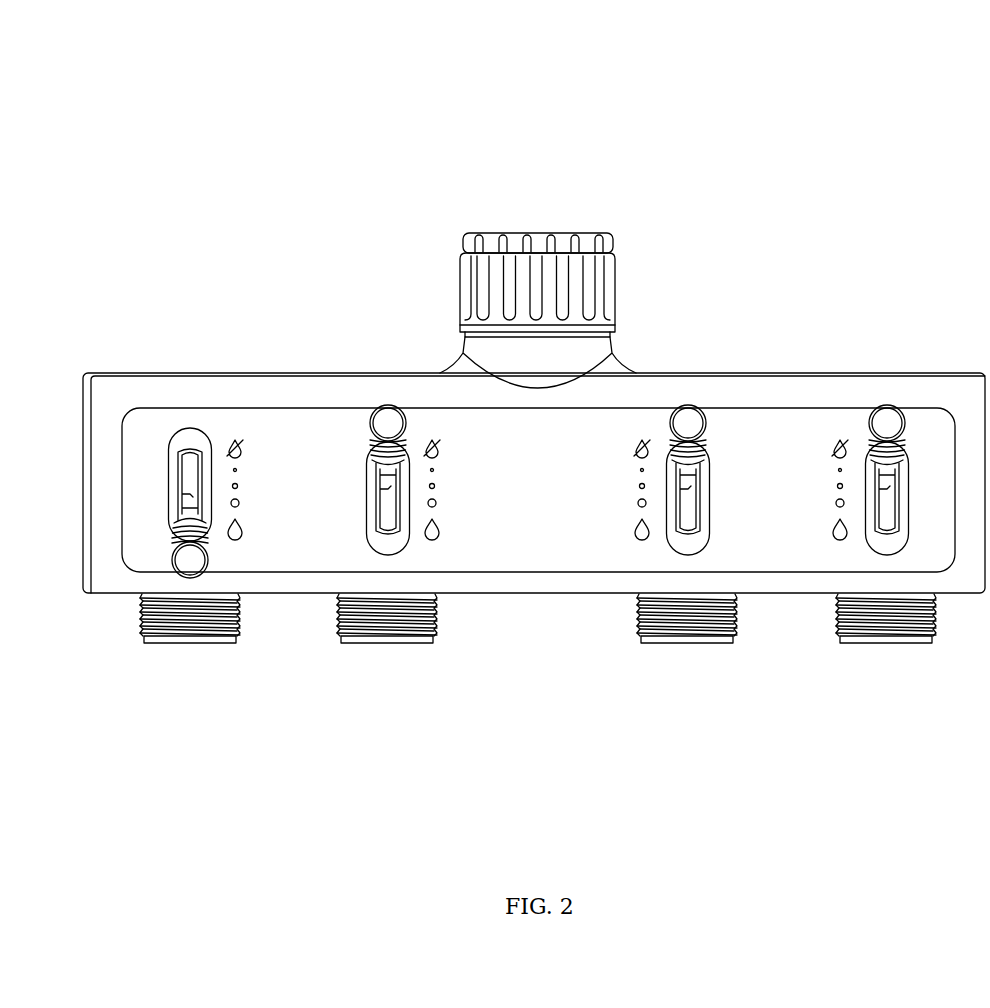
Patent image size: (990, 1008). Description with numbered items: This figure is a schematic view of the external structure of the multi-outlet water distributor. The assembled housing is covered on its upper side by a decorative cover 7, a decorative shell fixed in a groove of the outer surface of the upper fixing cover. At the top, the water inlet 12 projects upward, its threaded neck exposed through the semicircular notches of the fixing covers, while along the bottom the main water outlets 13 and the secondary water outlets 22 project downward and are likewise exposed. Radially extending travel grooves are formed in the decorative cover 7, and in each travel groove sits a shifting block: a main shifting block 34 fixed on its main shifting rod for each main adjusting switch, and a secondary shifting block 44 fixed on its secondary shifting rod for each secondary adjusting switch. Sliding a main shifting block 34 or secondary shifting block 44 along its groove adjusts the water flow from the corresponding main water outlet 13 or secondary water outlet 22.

The decorative cover 7 is at (290, 438).
The water inlet 12 is at (548, 232).
The main shifting block 34 is at (388, 420).
The secondary shifting block 44 is at (886, 420).
The main water outlet 13 is at (388, 645).
The secondary water outlet 22 is at (205, 645).